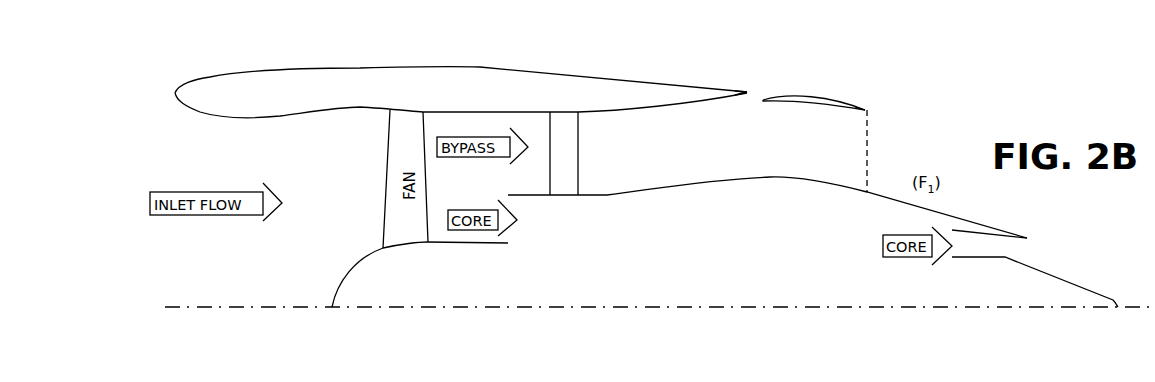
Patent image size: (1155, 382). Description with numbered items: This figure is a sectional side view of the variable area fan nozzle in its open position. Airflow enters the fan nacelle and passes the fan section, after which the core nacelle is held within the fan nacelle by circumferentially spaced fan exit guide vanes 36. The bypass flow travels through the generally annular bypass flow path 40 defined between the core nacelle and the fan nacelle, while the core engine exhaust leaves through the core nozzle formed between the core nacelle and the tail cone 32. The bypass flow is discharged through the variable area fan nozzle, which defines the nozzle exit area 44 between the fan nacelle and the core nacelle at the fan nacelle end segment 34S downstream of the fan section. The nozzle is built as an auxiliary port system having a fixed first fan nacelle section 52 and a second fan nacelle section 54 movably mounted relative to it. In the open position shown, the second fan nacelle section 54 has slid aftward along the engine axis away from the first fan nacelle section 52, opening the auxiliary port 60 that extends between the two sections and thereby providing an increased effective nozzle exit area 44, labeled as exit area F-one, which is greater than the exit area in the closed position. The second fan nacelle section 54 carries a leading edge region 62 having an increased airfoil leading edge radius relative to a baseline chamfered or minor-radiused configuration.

The tail cone 32 is at (1067, 280).
The fan nacelle end segment 34S is at (865, 110).
The fan exit guide vanes 36 is at (578, 157).
The bypass flow path 40 is at (675, 171).
The nozzle exit area 44 is at (868, 149).
The first fan nacelle section 52 is at (673, 92).
The second fan nacelle section 54 is at (817, 105).
The auxiliary port 60 is at (747, 93).
The leading edge region 62 is at (781, 85).